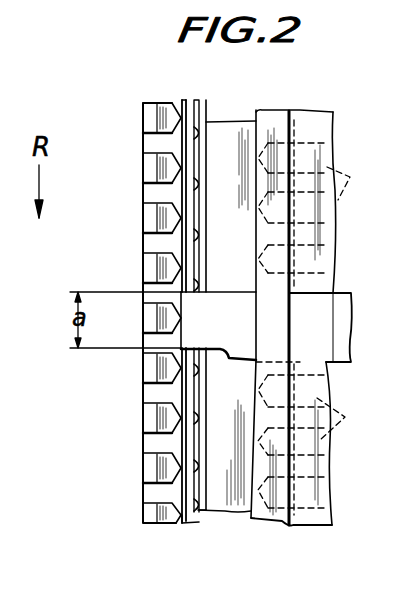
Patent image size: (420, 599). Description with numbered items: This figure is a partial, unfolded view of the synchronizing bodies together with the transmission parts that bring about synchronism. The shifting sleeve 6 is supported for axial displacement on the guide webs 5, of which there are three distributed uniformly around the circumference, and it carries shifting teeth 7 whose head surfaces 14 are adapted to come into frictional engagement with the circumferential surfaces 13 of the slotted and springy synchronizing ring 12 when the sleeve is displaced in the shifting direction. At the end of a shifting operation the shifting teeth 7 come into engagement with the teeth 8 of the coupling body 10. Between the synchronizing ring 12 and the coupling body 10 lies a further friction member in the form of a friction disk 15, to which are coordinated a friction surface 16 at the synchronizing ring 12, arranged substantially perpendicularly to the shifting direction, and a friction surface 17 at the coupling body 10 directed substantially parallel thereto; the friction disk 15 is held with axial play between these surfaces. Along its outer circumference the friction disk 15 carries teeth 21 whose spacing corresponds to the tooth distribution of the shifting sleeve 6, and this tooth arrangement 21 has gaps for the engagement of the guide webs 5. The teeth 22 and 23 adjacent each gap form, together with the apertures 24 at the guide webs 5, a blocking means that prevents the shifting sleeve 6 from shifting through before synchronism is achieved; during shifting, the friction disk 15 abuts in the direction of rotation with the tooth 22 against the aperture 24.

The guide webs 5 is at (340, 312).
The shifting sleeve 6 is at (315, 519).
The shifting teeth 7 is at (314, 317).
The teeth 8 is at (143, 214).
The coupling body 10 is at (147, 143).
The synchronizing ring 12 is at (208, 121).
The circumferential surfaces 13 is at (237, 511).
The head surfaces 14 is at (275, 113).
The friction disk 15 is at (188, 522).
The friction surface 16 is at (148, 396).
The friction surface 17 is at (182, 500).
The teeth 21 is at (186, 108).
The tooth 22 is at (193, 286).
The tooth 23 is at (192, 371).
The apertures 24 is at (211, 291).